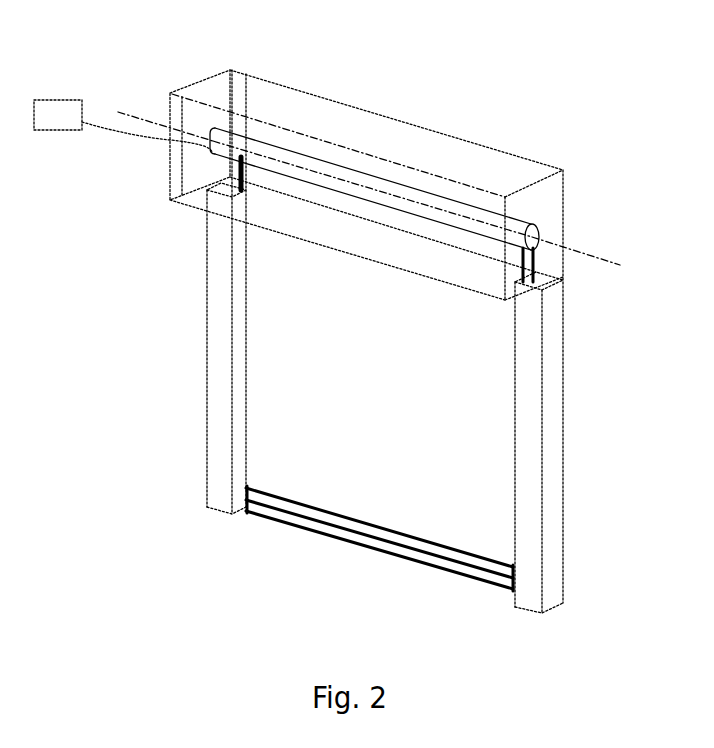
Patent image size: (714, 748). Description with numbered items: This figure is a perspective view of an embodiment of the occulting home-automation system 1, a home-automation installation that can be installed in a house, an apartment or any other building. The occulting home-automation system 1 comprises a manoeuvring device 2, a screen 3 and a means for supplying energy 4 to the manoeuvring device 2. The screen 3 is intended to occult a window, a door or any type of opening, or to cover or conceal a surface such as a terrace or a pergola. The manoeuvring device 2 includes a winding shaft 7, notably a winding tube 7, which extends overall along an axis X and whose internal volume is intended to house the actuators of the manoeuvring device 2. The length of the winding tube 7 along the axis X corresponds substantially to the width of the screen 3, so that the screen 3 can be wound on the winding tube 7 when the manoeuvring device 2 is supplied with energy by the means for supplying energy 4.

The occulting home-automation system 1 is at (632, 63).
The manoeuvring device 2 is at (270, 128).
The screen 3 is at (380, 512).
The means for supplying energy 4 is at (56, 113).
The winding shaft 7 is at (365, 180).
The axis X is at (590, 258).